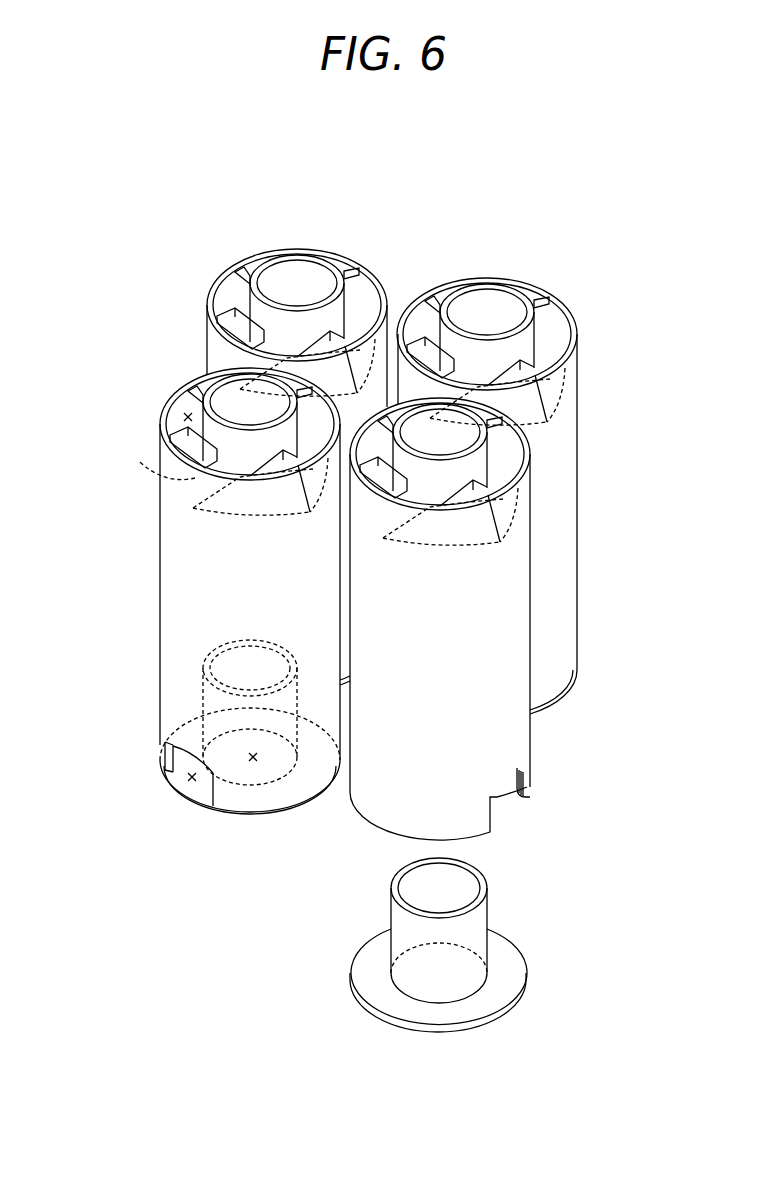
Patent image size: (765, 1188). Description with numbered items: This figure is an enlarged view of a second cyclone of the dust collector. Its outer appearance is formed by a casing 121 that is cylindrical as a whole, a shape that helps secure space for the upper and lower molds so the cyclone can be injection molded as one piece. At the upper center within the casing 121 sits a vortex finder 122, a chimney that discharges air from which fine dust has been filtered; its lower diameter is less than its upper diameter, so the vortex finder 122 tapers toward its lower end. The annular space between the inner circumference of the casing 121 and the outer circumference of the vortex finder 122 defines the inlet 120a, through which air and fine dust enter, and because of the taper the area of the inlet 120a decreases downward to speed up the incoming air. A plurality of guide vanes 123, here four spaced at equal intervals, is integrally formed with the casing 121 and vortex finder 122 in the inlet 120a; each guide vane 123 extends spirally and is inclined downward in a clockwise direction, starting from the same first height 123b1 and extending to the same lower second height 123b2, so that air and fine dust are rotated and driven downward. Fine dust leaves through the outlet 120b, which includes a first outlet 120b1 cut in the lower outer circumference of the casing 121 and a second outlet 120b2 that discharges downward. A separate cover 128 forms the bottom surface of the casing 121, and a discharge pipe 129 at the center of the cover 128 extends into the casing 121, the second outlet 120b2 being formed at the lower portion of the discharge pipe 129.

The inlet 120a is at (186, 415).
The outlet 120b is at (231, 795).
The first outlet 120b1 is at (192, 782).
The second outlet 120b2 is at (253, 762).
The casing 121 is at (172, 557).
The vortex finder 122 is at (212, 372).
The guide vane 123 is at (222, 495).
The first height 123b1 is at (473, 480).
The second height 123b2 is at (408, 517).
The cover 128 is at (507, 963).
The discharge pipe 129 is at (488, 910).